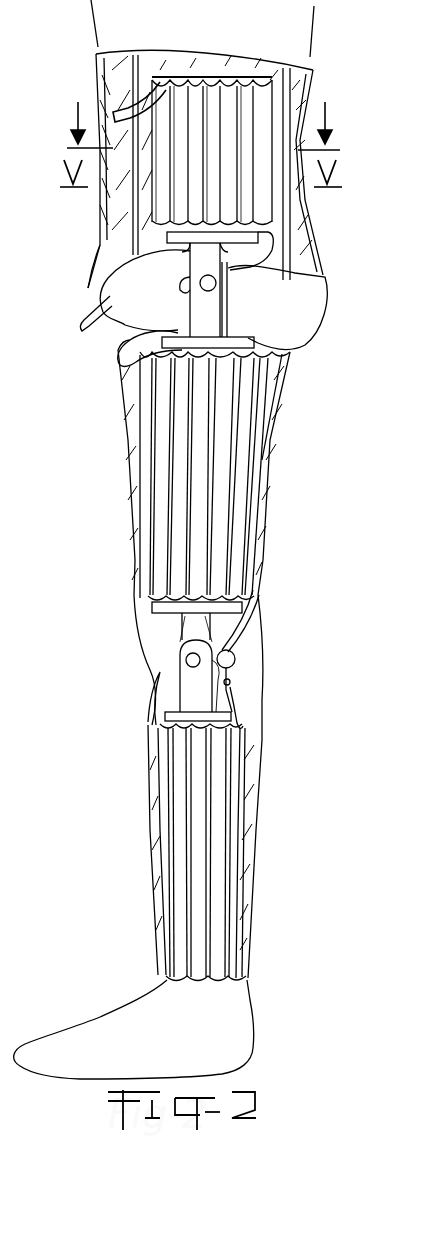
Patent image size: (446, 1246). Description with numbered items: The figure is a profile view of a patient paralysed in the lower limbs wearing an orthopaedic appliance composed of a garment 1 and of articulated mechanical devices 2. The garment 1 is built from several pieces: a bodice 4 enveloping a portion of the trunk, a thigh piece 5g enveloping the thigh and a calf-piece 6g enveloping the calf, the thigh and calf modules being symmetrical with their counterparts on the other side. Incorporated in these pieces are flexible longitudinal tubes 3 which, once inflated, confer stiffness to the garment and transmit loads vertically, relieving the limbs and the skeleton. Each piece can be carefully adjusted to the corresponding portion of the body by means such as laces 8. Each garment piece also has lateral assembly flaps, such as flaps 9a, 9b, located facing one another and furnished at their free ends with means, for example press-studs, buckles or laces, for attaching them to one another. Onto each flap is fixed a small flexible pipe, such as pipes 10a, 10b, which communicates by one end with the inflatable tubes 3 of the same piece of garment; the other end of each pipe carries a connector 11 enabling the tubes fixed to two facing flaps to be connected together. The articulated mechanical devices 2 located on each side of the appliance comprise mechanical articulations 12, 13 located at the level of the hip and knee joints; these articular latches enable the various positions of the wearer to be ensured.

The garment 1 is at (122, 482).
The articulated mechanical devices 2 is at (170, 692).
The flexible longitudinal tubes 3 is at (265, 97).
The bodice 4 is at (336, 92).
The thigh piece 5g is at (282, 460).
The calf-piece 6g is at (272, 838).
The laces 8 is at (110, 74).
The lateral assembly flap 9a is at (180, 254).
The lateral assembly flap 9b is at (180, 324).
The small flexible pipe 10a is at (242, 622).
The small flexible pipe 10b is at (242, 712).
The connector 11 is at (232, 670).
The mechanical articulation 12 is at (214, 290).
The mechanical articulation 13 is at (180, 660).